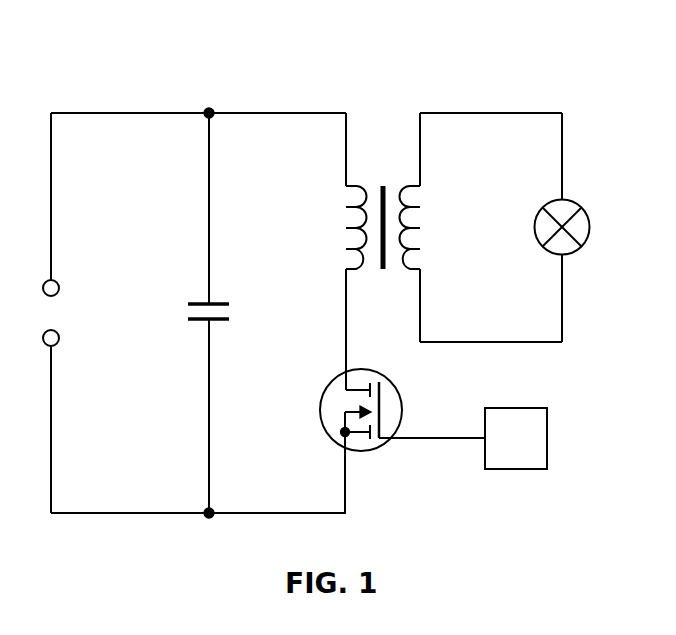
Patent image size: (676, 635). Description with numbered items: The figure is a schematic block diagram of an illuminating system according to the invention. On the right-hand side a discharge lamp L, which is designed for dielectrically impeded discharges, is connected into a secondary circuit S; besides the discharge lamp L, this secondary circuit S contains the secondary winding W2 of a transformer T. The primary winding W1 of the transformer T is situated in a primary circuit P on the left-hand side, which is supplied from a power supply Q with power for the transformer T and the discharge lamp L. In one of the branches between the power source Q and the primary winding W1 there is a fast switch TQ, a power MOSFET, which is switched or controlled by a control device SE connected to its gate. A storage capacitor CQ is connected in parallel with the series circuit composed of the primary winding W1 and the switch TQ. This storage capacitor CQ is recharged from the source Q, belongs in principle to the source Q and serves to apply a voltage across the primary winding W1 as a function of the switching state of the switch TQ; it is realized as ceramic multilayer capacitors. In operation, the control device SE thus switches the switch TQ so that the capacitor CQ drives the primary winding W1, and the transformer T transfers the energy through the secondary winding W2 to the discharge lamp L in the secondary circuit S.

The primary circuit P is at (139, 88).
The secondary circuit S is at (492, 89).
The transformer T is at (387, 184).
The power supply Q is at (35, 313).
The storage capacitor CQ is at (231, 313).
The primary winding W1 is at (328, 191).
The secondary winding W2 is at (442, 227).
The discharge lamp L is at (581, 227).
The fast switch TQ is at (362, 391).
The control device SE is at (463, 438).